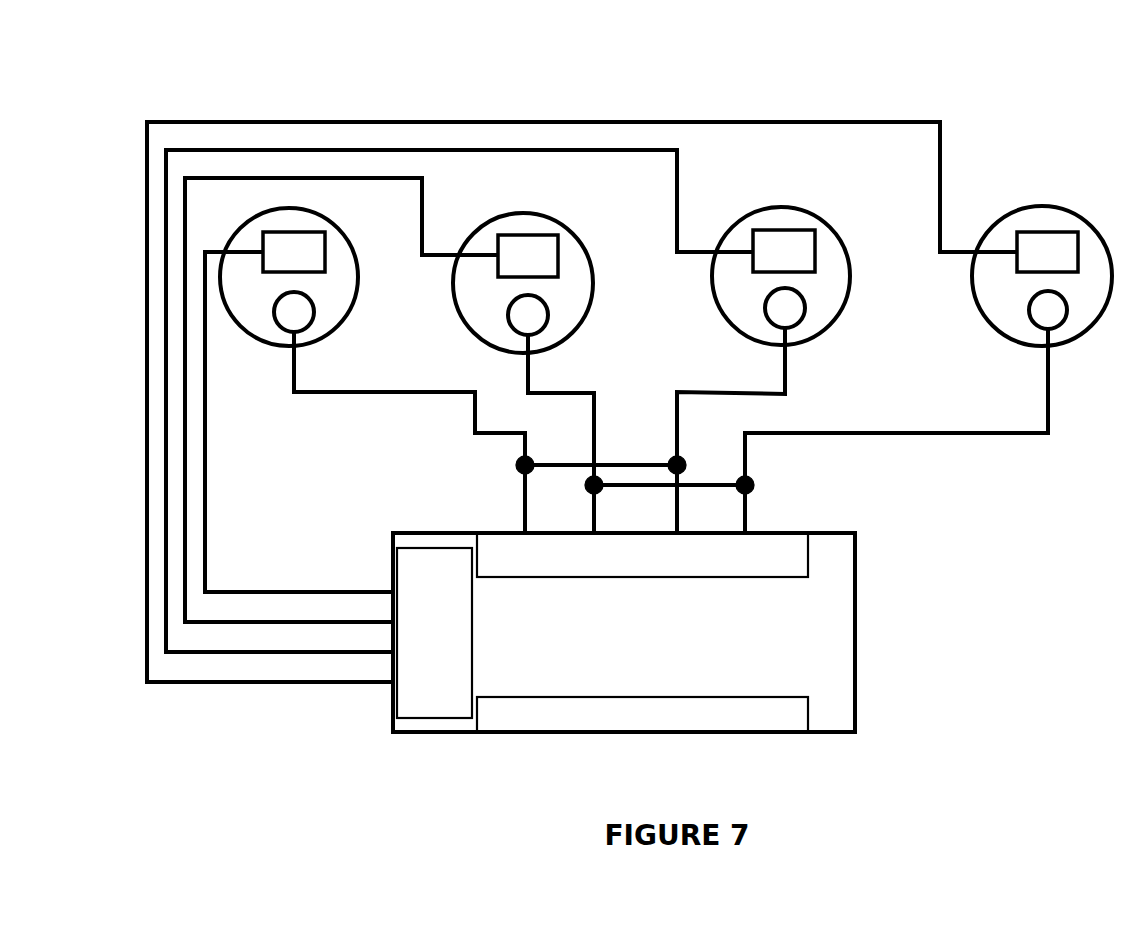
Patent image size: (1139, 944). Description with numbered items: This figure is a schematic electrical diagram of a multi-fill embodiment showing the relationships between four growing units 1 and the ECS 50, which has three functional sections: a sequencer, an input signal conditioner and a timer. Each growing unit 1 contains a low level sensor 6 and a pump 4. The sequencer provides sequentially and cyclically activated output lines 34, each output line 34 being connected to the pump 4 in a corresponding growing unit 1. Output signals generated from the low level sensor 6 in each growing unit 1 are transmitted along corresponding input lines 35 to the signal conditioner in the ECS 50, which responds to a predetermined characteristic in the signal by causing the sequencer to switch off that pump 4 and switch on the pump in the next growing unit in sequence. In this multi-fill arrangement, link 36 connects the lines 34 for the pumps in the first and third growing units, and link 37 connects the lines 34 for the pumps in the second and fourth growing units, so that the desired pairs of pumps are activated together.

The growing unit 1 is at (312, 210).
The low level sensor 6 is at (293, 230).
The pump 4 is at (278, 312).
The output line 34 is at (523, 512).
The input line 35 is at (173, 683).
The link 36 is at (560, 463).
The link 37 is at (692, 483).
The ECS 50 is at (855, 613).